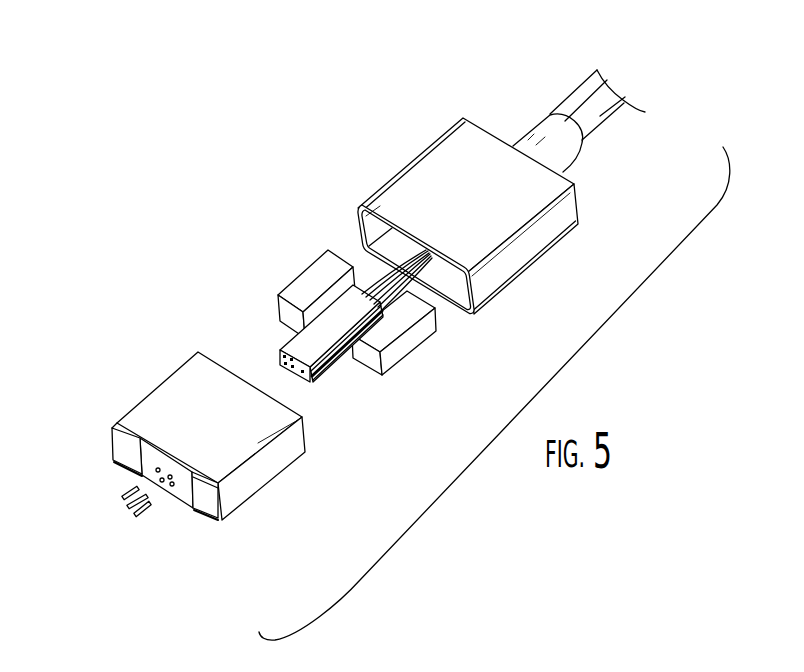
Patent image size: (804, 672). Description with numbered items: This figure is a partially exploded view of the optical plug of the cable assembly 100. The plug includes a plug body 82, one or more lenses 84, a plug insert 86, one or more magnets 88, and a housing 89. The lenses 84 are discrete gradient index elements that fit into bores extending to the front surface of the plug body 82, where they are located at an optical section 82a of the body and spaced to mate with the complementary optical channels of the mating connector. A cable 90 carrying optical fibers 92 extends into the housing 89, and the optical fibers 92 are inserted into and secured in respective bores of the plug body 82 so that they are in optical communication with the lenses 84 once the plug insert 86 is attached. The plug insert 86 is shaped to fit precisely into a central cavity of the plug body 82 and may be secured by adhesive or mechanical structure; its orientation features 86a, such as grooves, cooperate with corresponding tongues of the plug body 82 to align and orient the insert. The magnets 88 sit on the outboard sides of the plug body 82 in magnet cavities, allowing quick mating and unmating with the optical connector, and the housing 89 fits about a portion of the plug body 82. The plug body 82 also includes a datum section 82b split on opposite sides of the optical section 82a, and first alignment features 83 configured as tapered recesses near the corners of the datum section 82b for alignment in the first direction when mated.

The plug body 82 is at (190, 451).
The optical section 82a is at (180, 503).
The datum section 82b is at (127, 457).
The first alignment features 83 is at (115, 425).
The lenses 84 is at (125, 510).
The plug insert 86 is at (300, 345).
The orientation features 86a is at (328, 367).
The magnets 88 is at (305, 281).
The housing 89 is at (427, 170).
The cable 90 is at (608, 122).
The optical fibers 92 is at (379, 298).
The cable assembly 100 is at (562, 279).